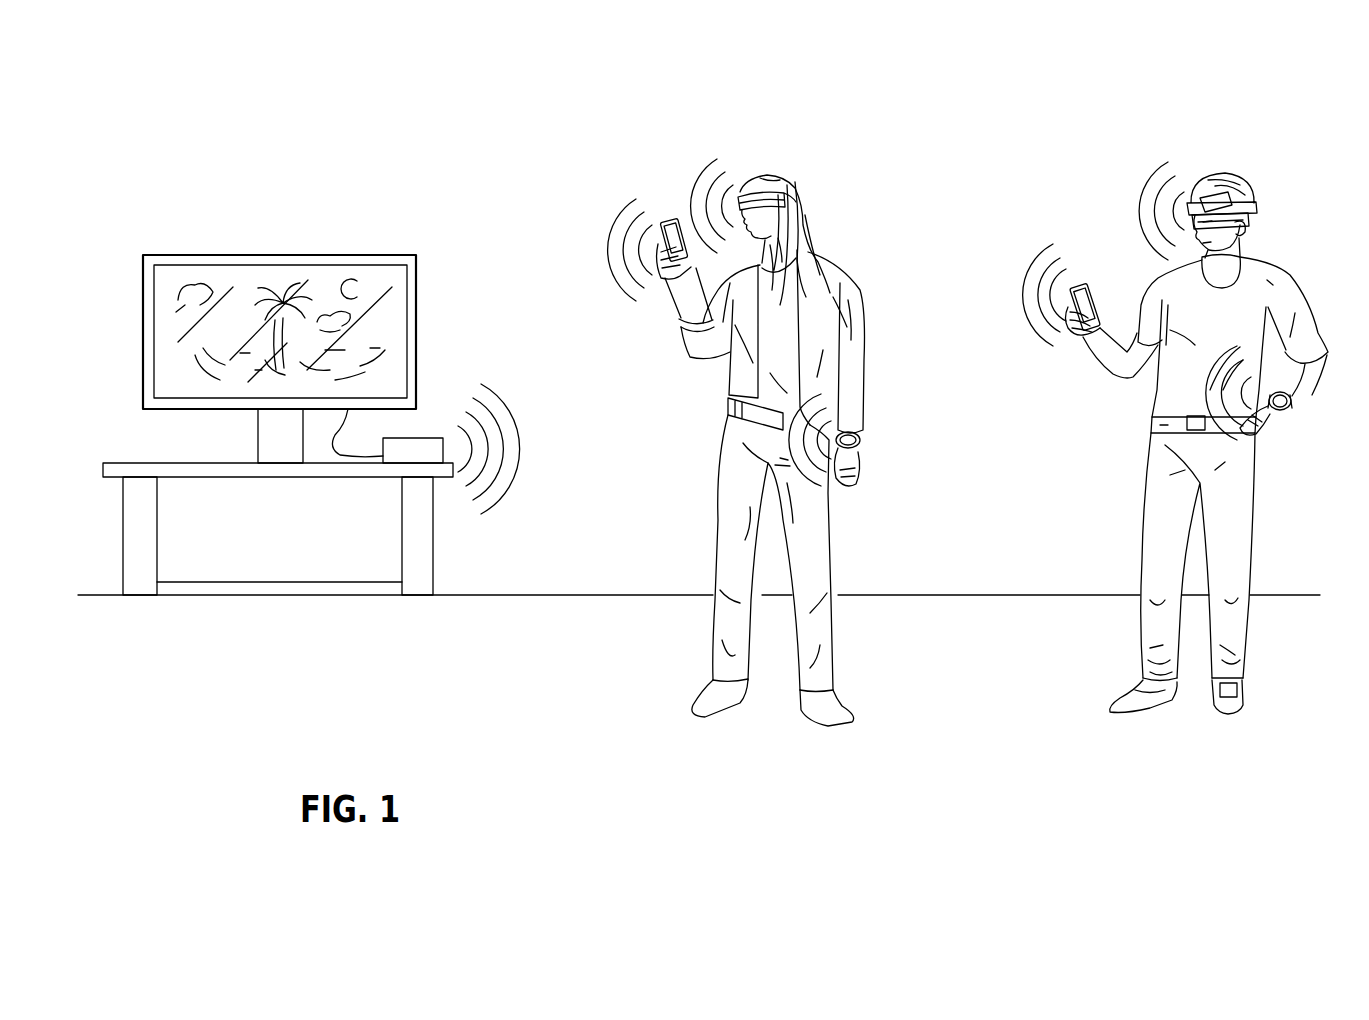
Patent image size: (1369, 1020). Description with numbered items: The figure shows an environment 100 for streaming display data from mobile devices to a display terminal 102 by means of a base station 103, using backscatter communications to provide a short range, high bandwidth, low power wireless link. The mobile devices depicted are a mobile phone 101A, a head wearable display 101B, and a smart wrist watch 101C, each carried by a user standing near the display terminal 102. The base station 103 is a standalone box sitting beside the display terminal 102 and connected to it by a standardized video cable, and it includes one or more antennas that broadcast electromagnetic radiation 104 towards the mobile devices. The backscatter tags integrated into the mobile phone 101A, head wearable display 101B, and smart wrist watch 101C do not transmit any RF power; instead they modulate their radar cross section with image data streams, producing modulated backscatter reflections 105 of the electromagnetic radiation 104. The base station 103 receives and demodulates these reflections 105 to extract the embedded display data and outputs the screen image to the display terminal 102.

The environment 100 is at (213, 142).
The mobile phone 101A is at (665, 206).
The head wearable display 101B is at (777, 188).
The smart wrist watch 101C is at (871, 428).
The display terminal 102 is at (348, 256).
The base station 103 is at (428, 461).
The electromagnetic radiation 104 is at (498, 507).
The modulated backscatter reflections 105 is at (612, 217).